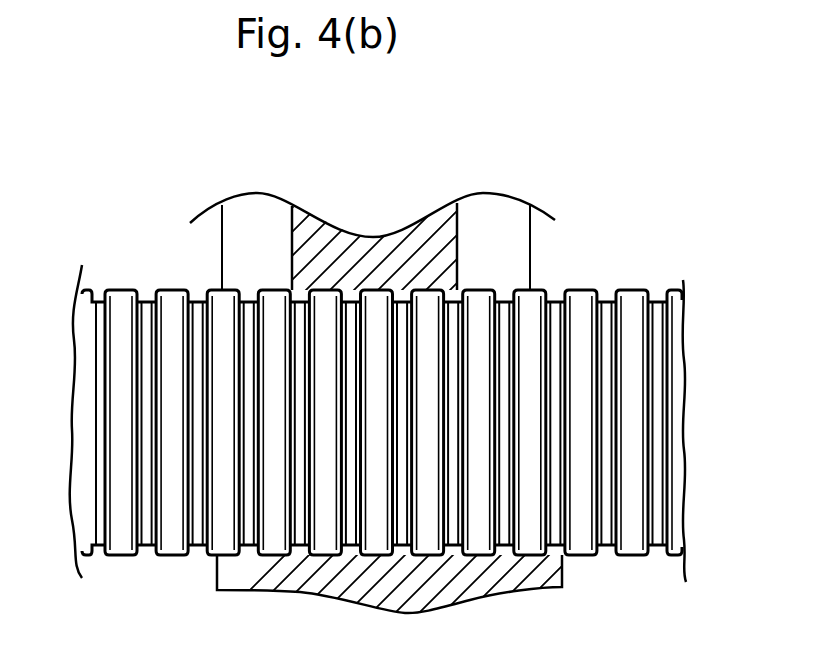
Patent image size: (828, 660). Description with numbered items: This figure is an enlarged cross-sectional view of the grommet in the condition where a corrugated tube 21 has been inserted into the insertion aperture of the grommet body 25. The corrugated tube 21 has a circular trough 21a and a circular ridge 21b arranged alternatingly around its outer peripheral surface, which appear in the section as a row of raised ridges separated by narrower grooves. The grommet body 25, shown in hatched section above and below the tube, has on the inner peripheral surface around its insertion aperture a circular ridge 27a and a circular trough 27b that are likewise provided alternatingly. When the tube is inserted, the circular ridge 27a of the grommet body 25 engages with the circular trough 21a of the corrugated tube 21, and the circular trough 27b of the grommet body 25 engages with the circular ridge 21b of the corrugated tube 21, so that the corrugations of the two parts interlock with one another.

The corrugated tube 21 is at (392, 369).
The circular trough 21a is at (608, 301).
The circular ridge 21b is at (573, 290).
The grommet body 25 is at (398, 233).
The circular ridge 27a is at (148, 302).
The circular trough 27b is at (118, 295).